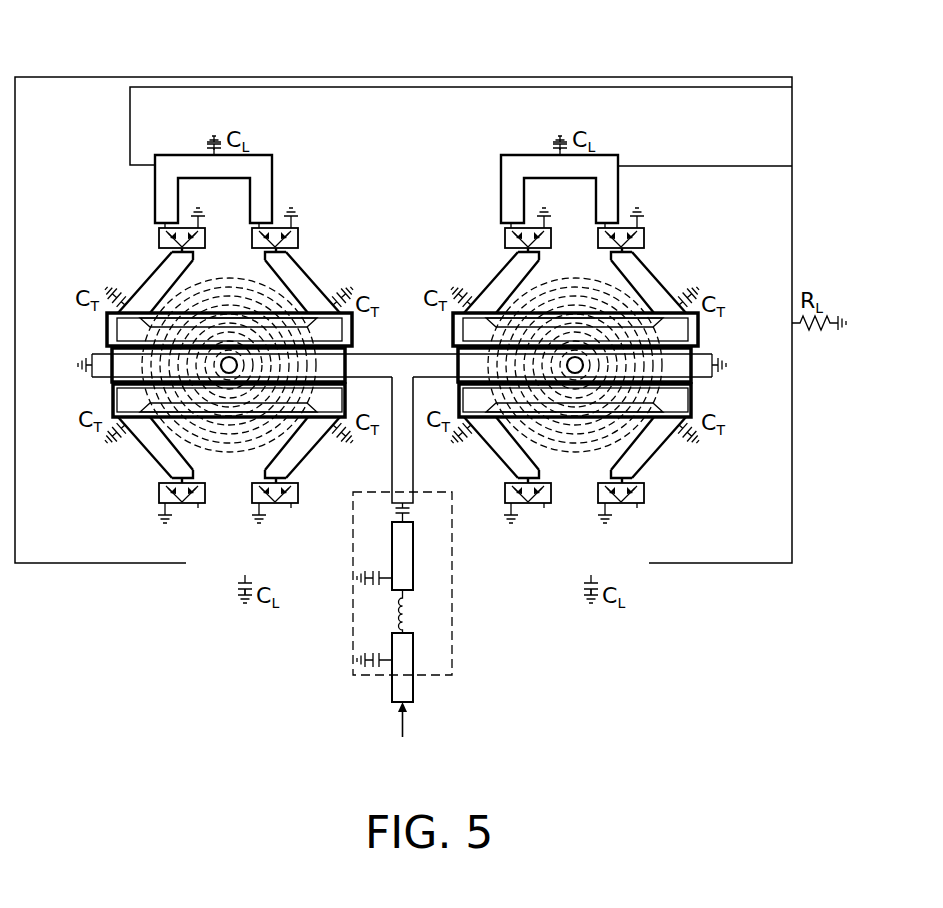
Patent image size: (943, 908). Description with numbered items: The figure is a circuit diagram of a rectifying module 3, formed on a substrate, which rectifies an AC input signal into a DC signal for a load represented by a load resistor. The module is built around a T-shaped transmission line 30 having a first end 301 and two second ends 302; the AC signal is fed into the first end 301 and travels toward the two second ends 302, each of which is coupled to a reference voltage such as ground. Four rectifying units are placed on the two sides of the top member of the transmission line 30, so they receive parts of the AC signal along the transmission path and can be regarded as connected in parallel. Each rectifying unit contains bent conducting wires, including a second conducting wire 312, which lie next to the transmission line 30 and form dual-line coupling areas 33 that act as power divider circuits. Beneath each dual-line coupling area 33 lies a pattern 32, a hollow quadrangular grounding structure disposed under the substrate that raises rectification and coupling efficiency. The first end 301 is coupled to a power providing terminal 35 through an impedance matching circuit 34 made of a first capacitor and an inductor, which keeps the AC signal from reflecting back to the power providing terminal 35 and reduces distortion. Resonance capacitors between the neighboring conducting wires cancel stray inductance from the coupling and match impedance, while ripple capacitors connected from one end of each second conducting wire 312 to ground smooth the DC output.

The rectifying module 3 is at (105, 25).
The transmission line 30 is at (372, 365).
The first end 301 is at (407, 465).
The second end 302 is at (92, 375).
The pattern 32 is at (165, 300).
The dual-line coupling area 33 is at (112, 330).
The impedance matching circuit 34 is at (452, 632).
The power providing terminal 35 is at (408, 690).
The second conducting wire 312 is at (150, 446).